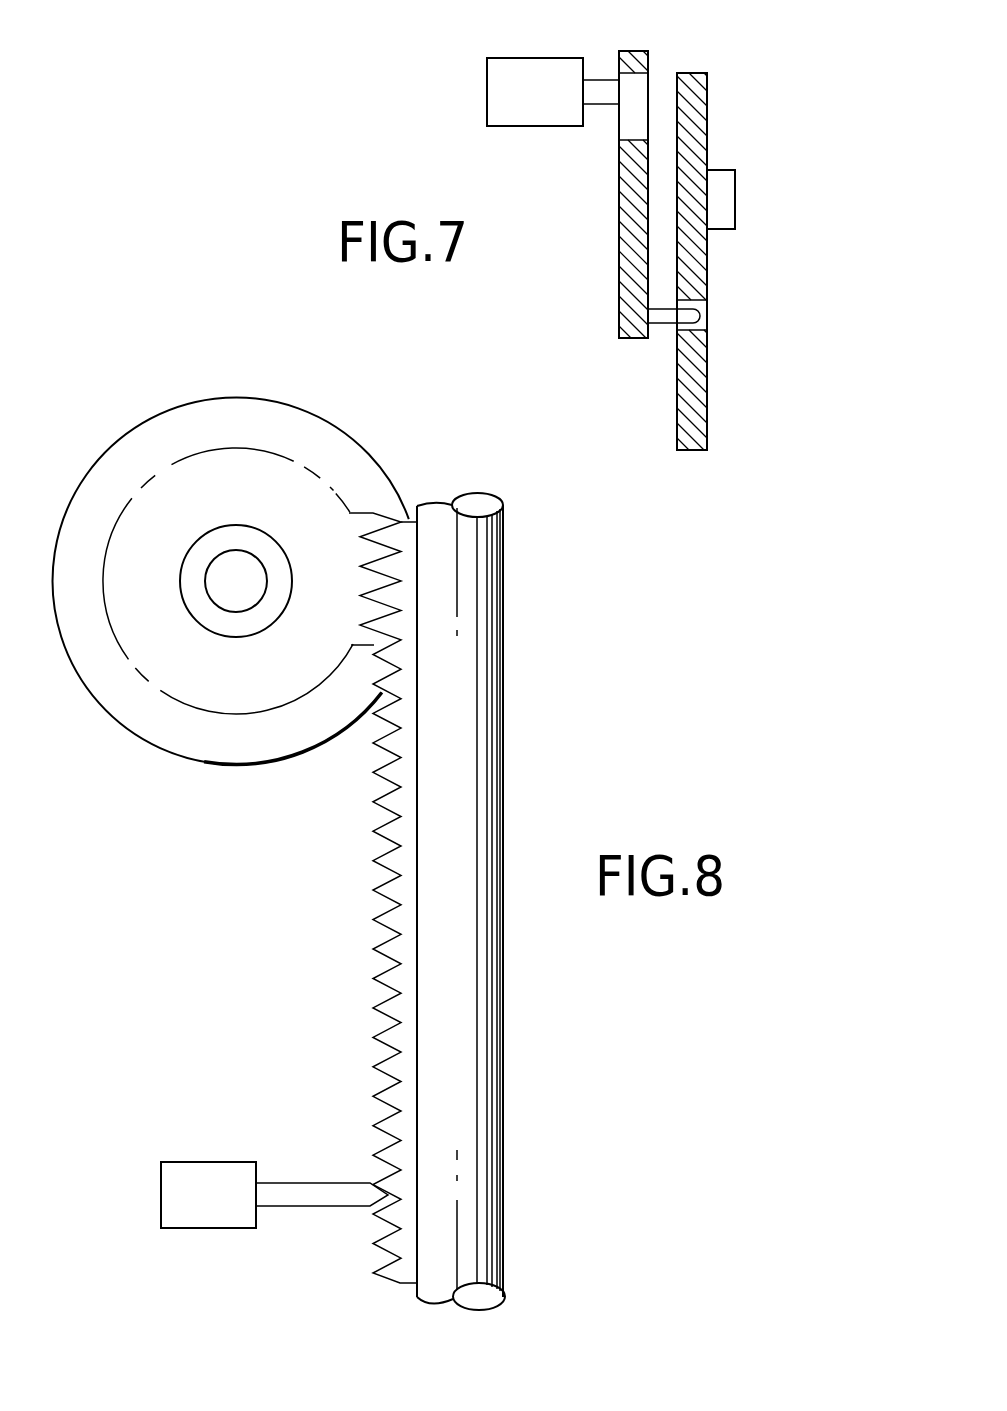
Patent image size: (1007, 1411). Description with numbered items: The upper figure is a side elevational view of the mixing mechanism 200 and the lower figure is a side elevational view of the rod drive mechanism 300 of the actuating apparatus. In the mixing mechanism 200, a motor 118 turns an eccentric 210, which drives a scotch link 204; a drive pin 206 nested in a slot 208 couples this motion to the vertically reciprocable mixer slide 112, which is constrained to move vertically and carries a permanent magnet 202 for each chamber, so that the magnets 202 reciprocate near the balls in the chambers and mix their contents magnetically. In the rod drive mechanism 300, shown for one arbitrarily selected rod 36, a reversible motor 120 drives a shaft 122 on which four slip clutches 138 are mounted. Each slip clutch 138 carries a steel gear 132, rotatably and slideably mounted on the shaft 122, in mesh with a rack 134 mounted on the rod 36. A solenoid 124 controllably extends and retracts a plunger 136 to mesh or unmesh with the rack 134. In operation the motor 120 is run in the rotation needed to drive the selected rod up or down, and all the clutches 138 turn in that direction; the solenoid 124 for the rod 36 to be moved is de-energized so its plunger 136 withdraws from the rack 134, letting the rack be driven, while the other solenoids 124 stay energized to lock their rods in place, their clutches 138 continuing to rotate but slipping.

In FIG. 8, the rod 36 is at (505, 710).
In FIG. 7, the mixer slide 112 is at (697, 123).
In FIG. 7, the motor 118 is at (510, 64).
In FIG. 8, the motor 120 is at (101, 683).
In FIG. 8, the shaft 122 is at (235, 580).
In FIG. 8, the solenoid 124 is at (212, 1162).
In FIG. 8, the gear 132 is at (214, 685).
In FIG. 8, the rack 134 is at (375, 920).
In FIG. 8, the plunger 136 is at (340, 1182).
In FIG. 8, the slip clutch 138 is at (258, 543).
In FIG. 7, the mechanism 200 is at (728, 43).
In FIG. 7, the permanent magnet 202 is at (727, 200).
In FIG. 7, the scotch link 204 is at (628, 285).
In FIG. 7, the drive pin 206 is at (703, 325).
In FIG. 7, the slot 208 is at (699, 309).
In FIG. 7, the eccentric 210 is at (627, 128).
In FIG. 8, the mechanism 300 is at (562, 598).